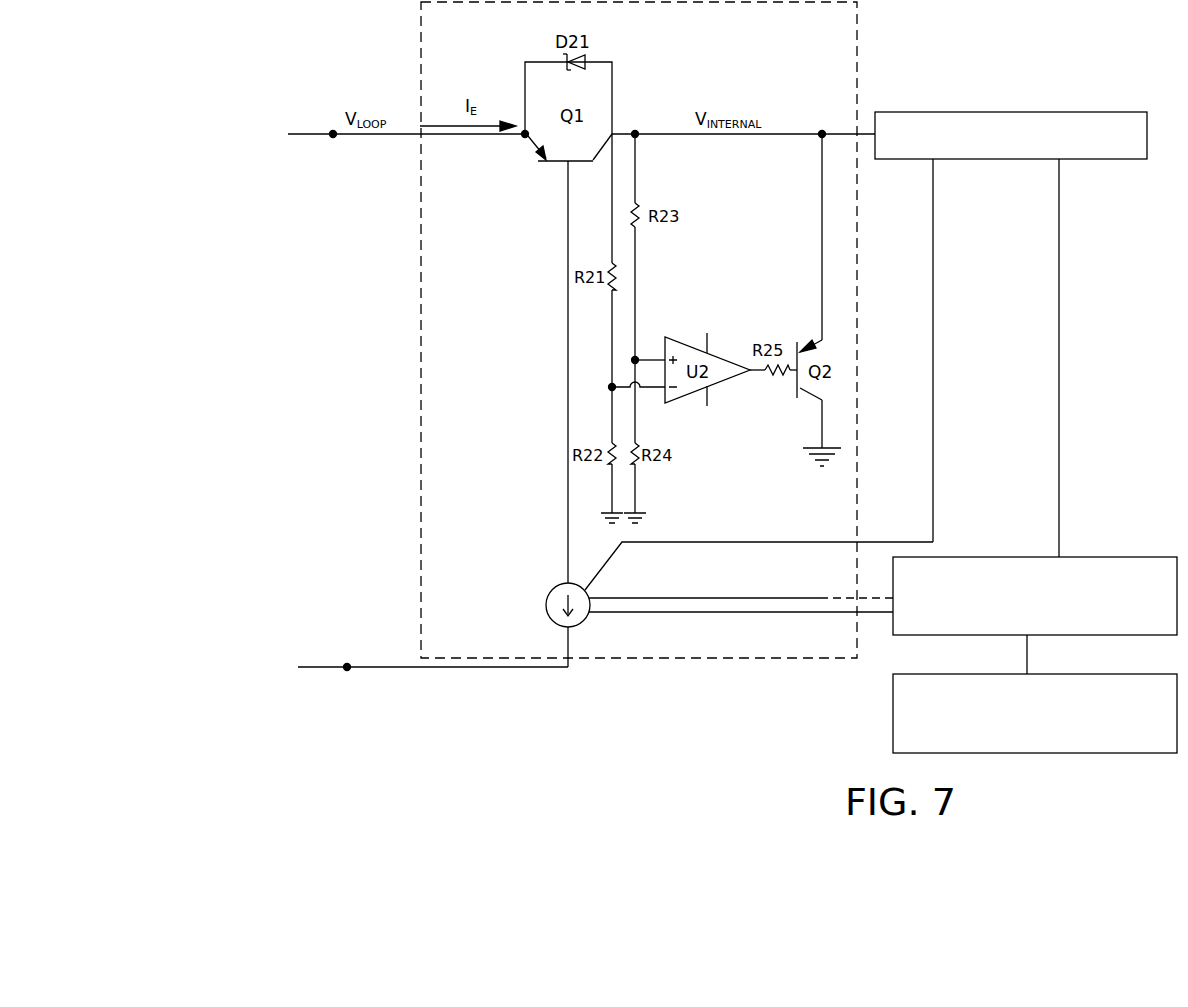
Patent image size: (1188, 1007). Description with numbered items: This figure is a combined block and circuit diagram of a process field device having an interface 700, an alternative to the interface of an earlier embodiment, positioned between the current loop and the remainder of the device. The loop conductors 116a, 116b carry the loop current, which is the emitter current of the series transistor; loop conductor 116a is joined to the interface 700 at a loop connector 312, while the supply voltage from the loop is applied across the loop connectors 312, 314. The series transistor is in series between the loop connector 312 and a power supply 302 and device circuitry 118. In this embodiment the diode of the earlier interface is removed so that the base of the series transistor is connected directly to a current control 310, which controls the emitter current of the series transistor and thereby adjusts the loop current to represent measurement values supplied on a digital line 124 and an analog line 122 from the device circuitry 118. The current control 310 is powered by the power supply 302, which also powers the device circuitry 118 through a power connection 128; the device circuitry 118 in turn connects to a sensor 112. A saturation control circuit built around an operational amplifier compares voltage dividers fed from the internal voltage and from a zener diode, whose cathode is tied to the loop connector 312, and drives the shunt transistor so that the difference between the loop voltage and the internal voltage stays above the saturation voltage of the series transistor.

The loop conductor 116a is at (300, 134).
The loop conductor 116b is at (315, 667).
The loop connector 312 is at (333, 136).
The loop connector 314 is at (345, 665).
The interface 700 is at (421, 290).
The power supply 302 is at (1125, 160).
The power connection 128 is at (1059, 395).
The current control 310 is at (553, 590).
The digital line 124 is at (782, 597).
The analog line 122 is at (763, 613).
The device circuitry 118 is at (1035, 596).
The sensor 112 is at (1035, 713).